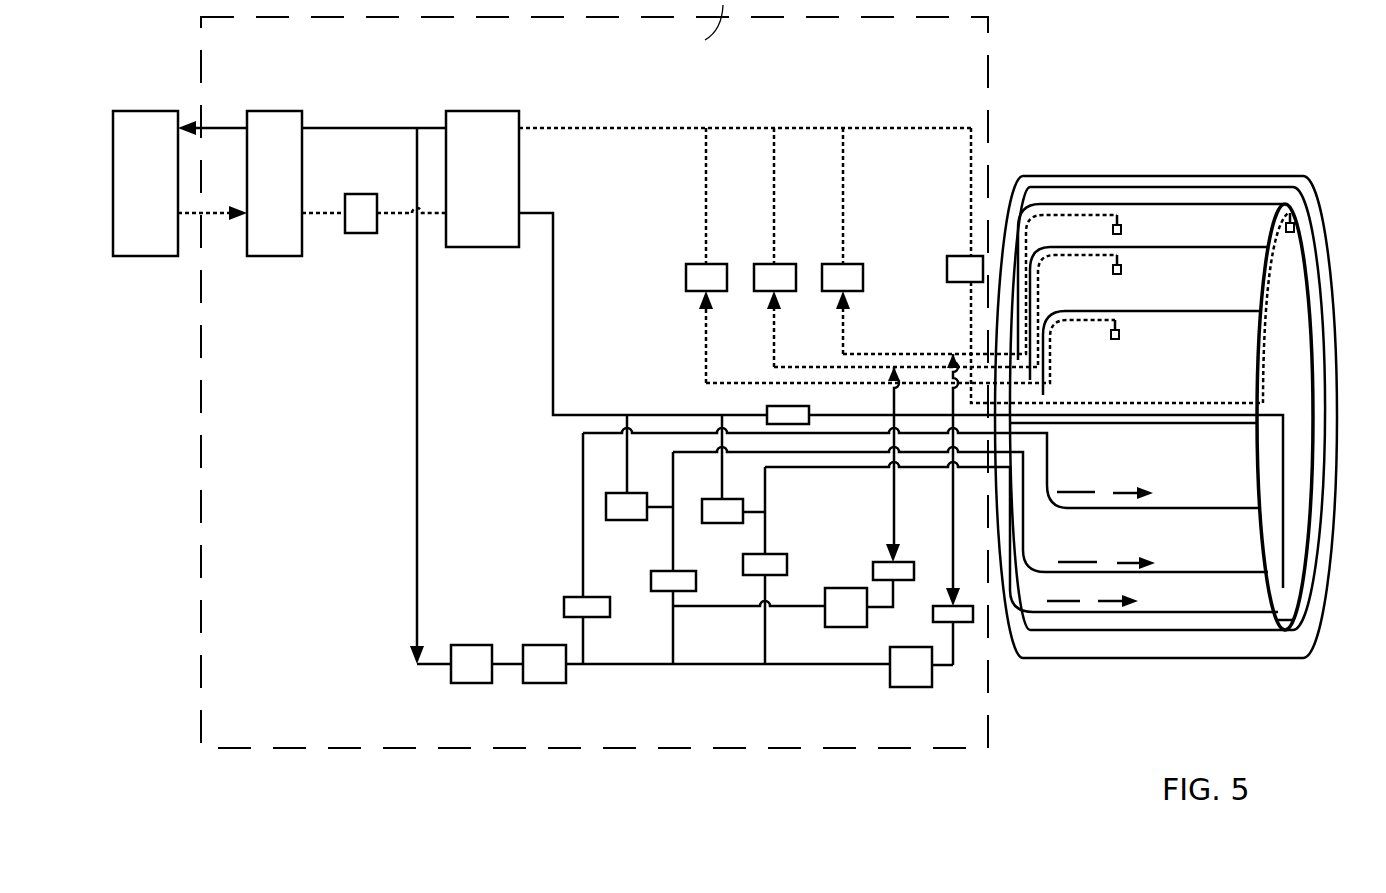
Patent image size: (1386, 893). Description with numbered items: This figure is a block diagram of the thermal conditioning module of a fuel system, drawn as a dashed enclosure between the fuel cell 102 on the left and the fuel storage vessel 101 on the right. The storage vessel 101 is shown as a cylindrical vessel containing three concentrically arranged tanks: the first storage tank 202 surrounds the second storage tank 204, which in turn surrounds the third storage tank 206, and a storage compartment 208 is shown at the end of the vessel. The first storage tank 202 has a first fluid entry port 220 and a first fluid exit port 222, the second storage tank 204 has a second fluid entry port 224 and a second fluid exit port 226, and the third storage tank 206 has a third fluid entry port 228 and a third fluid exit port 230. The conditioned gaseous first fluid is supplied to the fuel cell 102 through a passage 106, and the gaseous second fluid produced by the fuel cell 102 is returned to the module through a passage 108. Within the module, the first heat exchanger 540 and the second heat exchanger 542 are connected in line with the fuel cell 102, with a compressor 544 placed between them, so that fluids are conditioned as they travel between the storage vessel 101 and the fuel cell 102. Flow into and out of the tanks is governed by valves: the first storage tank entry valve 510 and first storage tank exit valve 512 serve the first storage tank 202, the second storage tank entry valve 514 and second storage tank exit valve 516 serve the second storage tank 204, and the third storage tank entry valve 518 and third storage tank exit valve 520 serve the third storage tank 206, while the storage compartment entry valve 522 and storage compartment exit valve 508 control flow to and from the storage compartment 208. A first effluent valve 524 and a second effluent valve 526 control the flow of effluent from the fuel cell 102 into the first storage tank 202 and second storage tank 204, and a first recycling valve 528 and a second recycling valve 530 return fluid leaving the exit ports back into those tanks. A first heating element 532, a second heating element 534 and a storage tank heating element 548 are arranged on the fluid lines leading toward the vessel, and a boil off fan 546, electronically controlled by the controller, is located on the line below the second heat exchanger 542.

The fuel storage vessel 101 is at (1138, 175).
The fuel cell 102 is at (155, 128).
The passage 106 is at (215, 128).
The passage 108 is at (212, 218).
The first storage tank 202 is at (1253, 598).
The second storage tank 204 is at (1218, 552).
The third storage tank 206 is at (1160, 480).
The storage compartment 208 is at (1302, 372).
The first fluid entry port 220 is at (1127, 602).
The first fluid exit port 222 is at (1043, 222).
The second fluid entry port 224 is at (1087, 562).
The second fluid exit port 226 is at (1070, 257).
The third fluid entry port 228 is at (1063, 497).
The third fluid exit port 230 is at (1110, 318).
The storage compartment exit valve 508 is at (965, 260).
The first storage tank entry valve 510 is at (753, 568).
The first storage tank exit valve 512 is at (852, 280).
The second storage tank entry valve 514 is at (667, 590).
The second storage tank exit valve 516 is at (773, 282).
The third storage tank entry valve 518 is at (573, 600).
The third storage tank exit valve 520 is at (697, 273).
The storage compartment entry valve 522 is at (773, 412).
The first effluent valve 524 is at (737, 520).
The second effluent valve 526 is at (638, 515).
The first recycling valve 528 is at (942, 612).
The second recycling valve 530 is at (917, 572).
The first heating element 532 is at (910, 683).
The second heating element 534 is at (840, 623).
The first heat exchanger 540 is at (495, 128).
The second heat exchanger 542 is at (275, 128).
The compressor 544 is at (375, 197).
The boil off fan 546 is at (472, 677).
The storage tank heating element 548 is at (548, 677).